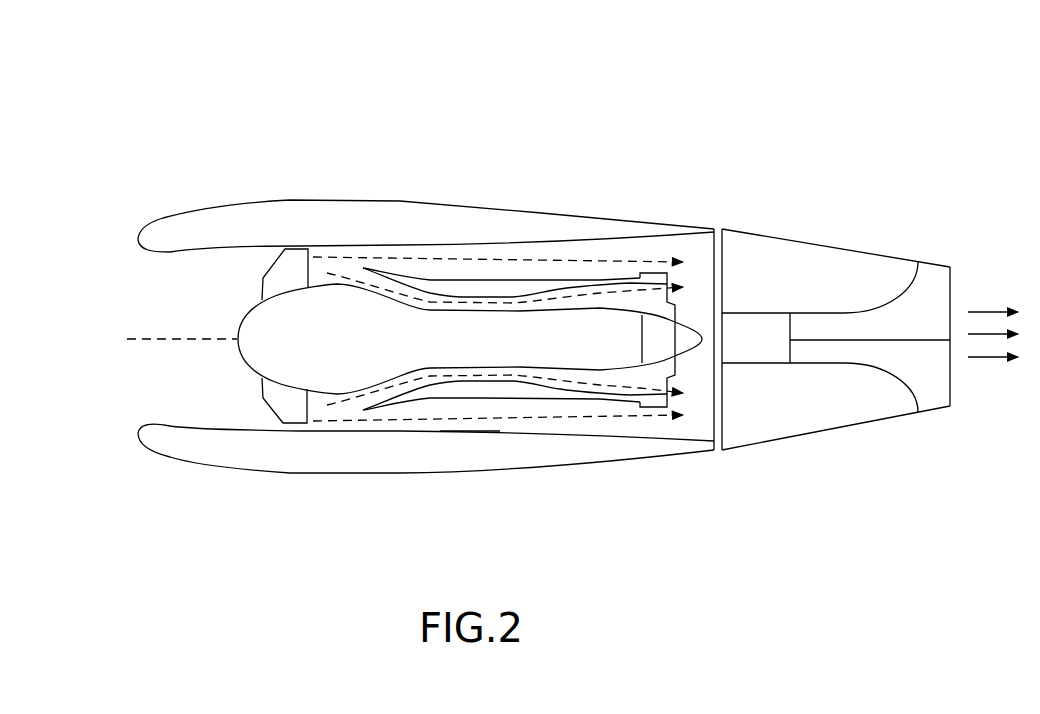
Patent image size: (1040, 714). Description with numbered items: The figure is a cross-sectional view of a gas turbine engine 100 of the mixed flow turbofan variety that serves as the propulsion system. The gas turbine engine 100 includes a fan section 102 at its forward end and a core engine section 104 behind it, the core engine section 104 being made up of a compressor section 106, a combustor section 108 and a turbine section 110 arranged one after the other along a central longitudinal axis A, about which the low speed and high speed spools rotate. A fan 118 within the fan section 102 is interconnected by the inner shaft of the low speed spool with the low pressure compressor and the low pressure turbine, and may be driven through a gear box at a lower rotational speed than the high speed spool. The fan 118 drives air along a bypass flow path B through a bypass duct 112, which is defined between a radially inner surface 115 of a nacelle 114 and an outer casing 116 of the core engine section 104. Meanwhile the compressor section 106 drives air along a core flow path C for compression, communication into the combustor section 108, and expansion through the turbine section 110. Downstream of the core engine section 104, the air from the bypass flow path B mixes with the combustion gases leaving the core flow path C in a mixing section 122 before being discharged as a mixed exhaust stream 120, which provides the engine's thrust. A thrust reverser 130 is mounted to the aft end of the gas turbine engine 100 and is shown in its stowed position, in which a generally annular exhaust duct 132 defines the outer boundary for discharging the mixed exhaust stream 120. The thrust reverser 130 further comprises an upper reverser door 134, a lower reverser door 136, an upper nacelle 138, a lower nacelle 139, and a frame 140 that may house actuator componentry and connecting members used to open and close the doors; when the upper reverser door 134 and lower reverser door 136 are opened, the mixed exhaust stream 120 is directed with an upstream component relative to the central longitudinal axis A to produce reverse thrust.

The gas turbine engine 100 is at (151, 145).
The fan section 102 is at (426, 294).
The core engine section 104 is at (388, 326).
The compressor section 106 is at (413, 281).
The combustor section 108 is at (520, 286).
The turbine section 110 is at (613, 270).
The bypass duct 112 is at (412, 420).
The nacelle 114 is at (253, 455).
The radially inner surface 115 is at (468, 432).
The outer casing 116 is at (513, 400).
The fan 118 is at (270, 410).
The mixed exhaust stream 120 is at (992, 312).
The mixing section 122 is at (698, 282).
The thrust reverser 130 is at (858, 296).
The exhaust duct 132 is at (952, 392).
The upper reverser door 134 is at (843, 250).
The lower reverser door 136 is at (800, 438).
The upper nacelle 138 is at (933, 270).
The lower nacelle 139 is at (930, 405).
The frame 140 is at (762, 335).
The central longitudinal axis A is at (145, 340).
The bypass flow path B is at (357, 421).
The core flow path C is at (631, 394).